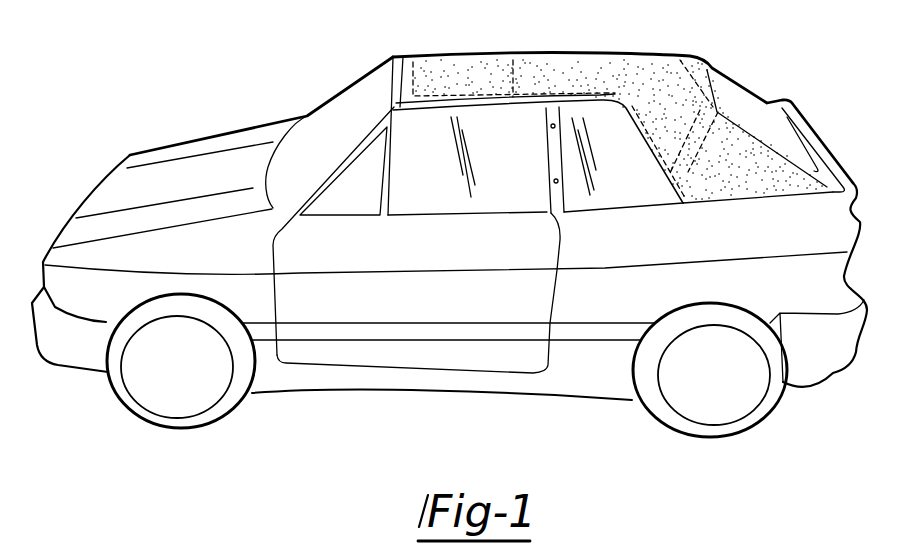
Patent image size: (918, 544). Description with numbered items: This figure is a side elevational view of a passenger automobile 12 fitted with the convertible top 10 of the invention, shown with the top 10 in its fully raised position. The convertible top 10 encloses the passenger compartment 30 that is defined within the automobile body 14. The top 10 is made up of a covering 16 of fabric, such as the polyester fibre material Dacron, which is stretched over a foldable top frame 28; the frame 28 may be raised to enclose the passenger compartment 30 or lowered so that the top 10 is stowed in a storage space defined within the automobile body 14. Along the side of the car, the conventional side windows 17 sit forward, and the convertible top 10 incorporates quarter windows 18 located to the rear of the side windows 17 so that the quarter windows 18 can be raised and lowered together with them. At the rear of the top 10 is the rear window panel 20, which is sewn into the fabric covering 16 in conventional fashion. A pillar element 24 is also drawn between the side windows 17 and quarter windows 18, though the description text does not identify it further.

The convertible top 10 is at (635, 50).
The passenger automobile 12 is at (268, 113).
The automobile body 14 is at (625, 254).
The covering 16 is at (463, 68).
The side windows 17 is at (519, 186).
The quarter windows 18 is at (630, 183).
The rear window panel 20 is at (743, 97).
The center pillar 24 is at (555, 143).
The foldable top frame 28 is at (515, 63).
The passenger compartment 30 is at (425, 168).